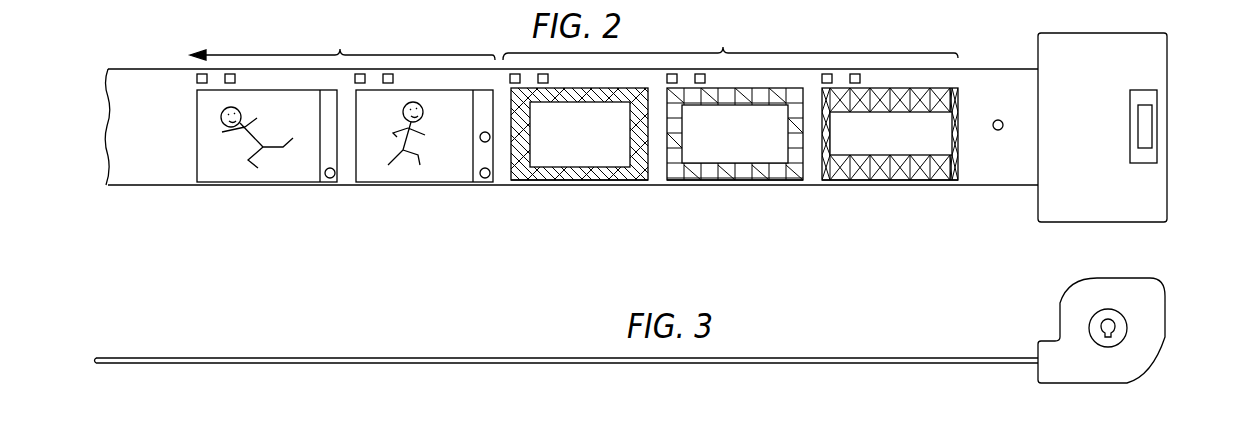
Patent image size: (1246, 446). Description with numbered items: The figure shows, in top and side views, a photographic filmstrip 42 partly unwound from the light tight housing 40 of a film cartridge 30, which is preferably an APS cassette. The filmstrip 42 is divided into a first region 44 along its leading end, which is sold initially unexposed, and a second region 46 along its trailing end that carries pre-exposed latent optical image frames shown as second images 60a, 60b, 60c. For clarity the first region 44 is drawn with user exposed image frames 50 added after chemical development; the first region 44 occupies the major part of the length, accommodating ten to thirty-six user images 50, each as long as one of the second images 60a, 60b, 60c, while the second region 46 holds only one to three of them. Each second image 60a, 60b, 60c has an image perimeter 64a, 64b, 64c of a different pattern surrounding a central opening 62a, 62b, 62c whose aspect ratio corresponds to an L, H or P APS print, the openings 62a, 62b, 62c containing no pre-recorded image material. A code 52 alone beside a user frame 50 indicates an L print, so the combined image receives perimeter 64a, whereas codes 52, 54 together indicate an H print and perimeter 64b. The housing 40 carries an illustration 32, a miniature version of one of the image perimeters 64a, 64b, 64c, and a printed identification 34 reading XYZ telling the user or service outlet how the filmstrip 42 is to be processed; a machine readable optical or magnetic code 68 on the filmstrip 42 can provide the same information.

In FIG. 2, the film cartridge 30 is at (1037, 48).
In FIG. 3, the film cartridge 30 is at (1129, 311).
In FIG. 2, the illustration 32 is at (1150, 163).
In FIG. 2, the printed identification 34 is at (1105, 92).
In FIG. 2, the light tight housing 40 is at (260, 5).
In FIG. 3, the light tight housing 40 is at (1165, 347).
In FIG. 2, the filmstrip 42 is at (571, 127).
In FIG. 3, the filmstrip 42 is at (376, 352).
In FIG. 2, the first region 44 is at (342, 40).
In FIG. 2, the second region 46 is at (730, 40).
In FIG. 2, the user exposed image frames 50 is at (217, 173).
In FIG. 2, the code 52 is at (329, 179).
In FIG. 2, the code 54 is at (481, 141).
In FIG. 2, the second image 60a is at (577, 168).
In FIG. 2, the second image 60b is at (735, 168).
In FIG. 2, the second image 60c is at (904, 168).
In FIG. 2, the central opening 62a is at (615, 181).
In FIG. 2, the central opening 62b is at (735, 134).
In FIG. 2, the central opening 62c is at (891, 133).
In FIG. 2, the image perimeter 64a is at (522, 182).
In FIG. 2, the image perimeter 64b is at (708, 172).
In FIG. 2, the image perimeter 64c is at (907, 170).
In FIG. 2, the machine readable code 68 is at (1000, 120).